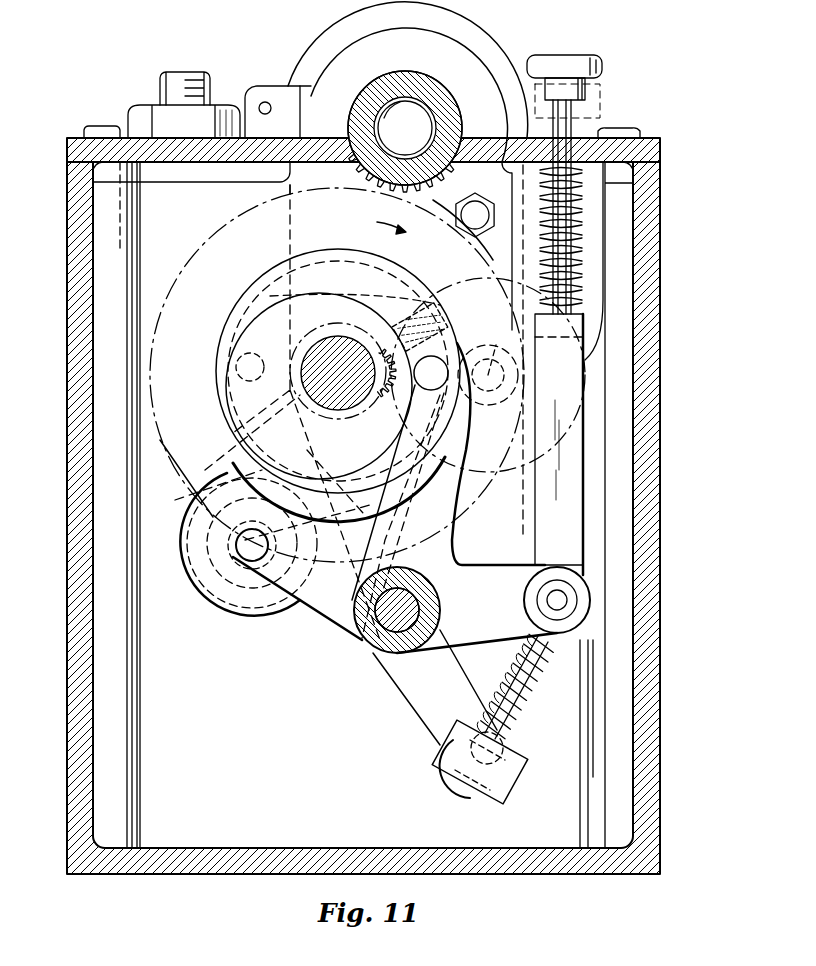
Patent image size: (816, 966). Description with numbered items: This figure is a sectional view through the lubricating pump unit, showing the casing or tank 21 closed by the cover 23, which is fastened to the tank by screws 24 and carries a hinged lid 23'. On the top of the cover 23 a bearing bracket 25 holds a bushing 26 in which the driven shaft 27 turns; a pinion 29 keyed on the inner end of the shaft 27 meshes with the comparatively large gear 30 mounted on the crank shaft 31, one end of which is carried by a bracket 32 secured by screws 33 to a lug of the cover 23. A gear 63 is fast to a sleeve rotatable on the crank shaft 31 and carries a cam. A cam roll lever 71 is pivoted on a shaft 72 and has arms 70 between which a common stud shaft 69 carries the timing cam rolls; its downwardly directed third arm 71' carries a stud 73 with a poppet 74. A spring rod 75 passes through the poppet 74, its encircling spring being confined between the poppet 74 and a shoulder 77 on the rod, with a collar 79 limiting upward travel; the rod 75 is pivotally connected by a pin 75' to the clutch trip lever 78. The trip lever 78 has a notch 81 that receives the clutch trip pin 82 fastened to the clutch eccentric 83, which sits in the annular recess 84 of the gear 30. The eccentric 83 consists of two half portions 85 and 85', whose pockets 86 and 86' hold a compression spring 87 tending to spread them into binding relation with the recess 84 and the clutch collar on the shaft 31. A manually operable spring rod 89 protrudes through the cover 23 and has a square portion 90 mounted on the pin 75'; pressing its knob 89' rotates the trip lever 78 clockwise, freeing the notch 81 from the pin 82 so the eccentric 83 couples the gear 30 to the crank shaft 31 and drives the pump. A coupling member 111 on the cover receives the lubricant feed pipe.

The casing or tank 21 is at (662, 372).
The cover 23 is at (647, 131).
The hinged lid 23' is at (386, 82).
The screws 24 is at (96, 126).
The bearing bracket 25 is at (462, 110).
The bushing 26 is at (418, 110).
The shaft 27 is at (400, 120).
The pinion 29 is at (338, 182).
The gear 30 is at (228, 222).
The crank shaft 31 is at (326, 342).
The bracket 32 is at (287, 228).
The screws 33 is at (514, 470).
The gear 63 is at (222, 617).
The stud shaft 69 is at (240, 552).
The arms of cam roll lever 70 is at (324, 622).
The cam roll lever 71 is at (445, 652).
The third arm 71' is at (434, 687).
The shaft 72 is at (400, 632).
The stud 73 is at (500, 770).
The poppet 74 is at (505, 742).
The spring rod 75 is at (524, 686).
The pin or stud 75' is at (589, 613).
The shoulder 77 is at (524, 600).
The clutch trip lever 78 is at (468, 512).
The collar 79 is at (446, 772).
The notch 81 is at (460, 342).
The clutch trip pin 82 is at (431, 373).
The clutch eccentric 83 is at (405, 268).
The annular recess 84 is at (410, 484).
The half portion of clutch eccentric 85 is at (264, 482).
The half portion of clutch eccentric 85' is at (329, 385).
The pocket 86 is at (359, 309).
The pocket 86' is at (429, 346).
The compression spring 87 is at (374, 318).
The manually operable spring rod 89 is at (581, 196).
The knob 89' is at (586, 56).
The square portion 90 is at (587, 515).
The coupling member 111 is at (144, 104).